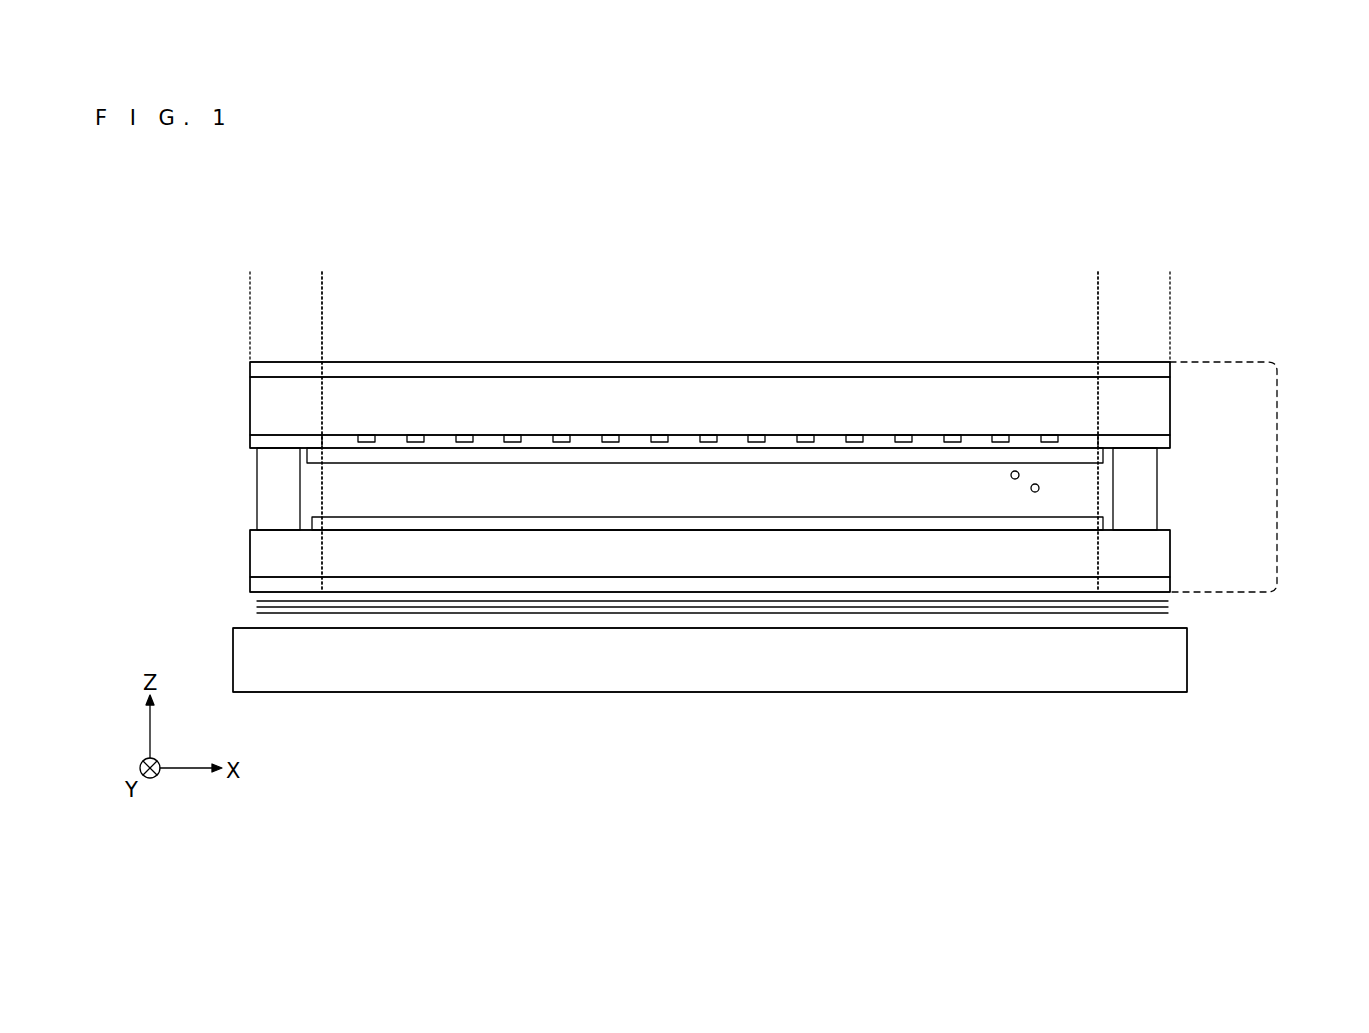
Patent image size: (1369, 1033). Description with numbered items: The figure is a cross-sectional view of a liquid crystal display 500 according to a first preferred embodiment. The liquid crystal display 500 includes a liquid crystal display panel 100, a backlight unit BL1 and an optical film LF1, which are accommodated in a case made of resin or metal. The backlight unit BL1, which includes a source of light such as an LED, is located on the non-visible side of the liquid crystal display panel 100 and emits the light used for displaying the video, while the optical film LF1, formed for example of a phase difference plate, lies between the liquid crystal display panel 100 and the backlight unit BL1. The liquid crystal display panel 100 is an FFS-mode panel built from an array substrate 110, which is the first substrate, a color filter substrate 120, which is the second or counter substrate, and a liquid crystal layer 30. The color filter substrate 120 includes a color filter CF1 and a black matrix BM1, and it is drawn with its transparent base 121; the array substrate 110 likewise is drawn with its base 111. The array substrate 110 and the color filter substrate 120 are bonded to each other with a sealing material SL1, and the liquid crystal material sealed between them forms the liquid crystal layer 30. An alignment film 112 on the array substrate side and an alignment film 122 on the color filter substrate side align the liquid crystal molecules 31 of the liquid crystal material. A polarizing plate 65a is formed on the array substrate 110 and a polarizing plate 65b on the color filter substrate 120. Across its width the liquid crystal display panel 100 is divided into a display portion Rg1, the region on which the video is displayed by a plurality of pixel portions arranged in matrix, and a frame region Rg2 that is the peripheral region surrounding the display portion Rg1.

The liquid crystal display 500 is at (1228, 304).
The liquid crystal display panel 100 is at (1283, 362).
The color filter substrate 120 is at (1203, 377).
The array substrate 110 is at (1203, 530).
The transparent substrate of counter substrate 121 is at (262, 412).
The alignment film 122 is at (378, 457).
The transparent substrate of array substrate 111 is at (258, 552).
The alignment film 112 is at (458, 525).
The polarizing plate 65b is at (255, 370).
The polarizing plate 65a is at (255, 585).
The black matrix BM1 is at (262, 441).
The color filter CF1 is at (928, 437).
The sealing material SL1 is at (1150, 488).
The liquid crystal layer 30 is at (350, 492).
The liquid crystal molecules 31 is at (1029, 489).
The optical film LF1 is at (1186, 597).
The backlight unit BL1 is at (1177, 658).
The display portion Rg1 is at (1098, 270).
The frame region Rg2 is at (322, 270).